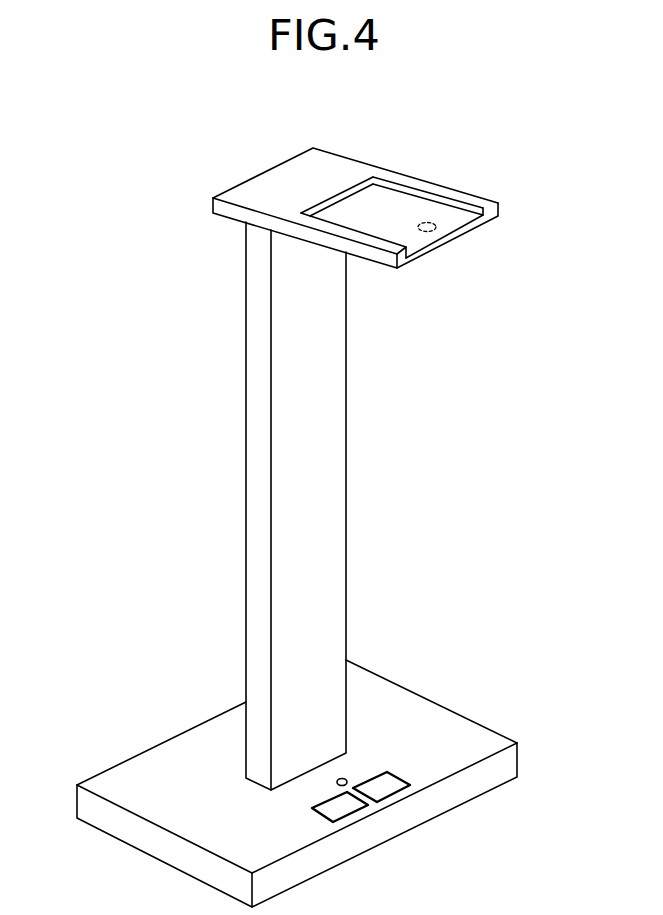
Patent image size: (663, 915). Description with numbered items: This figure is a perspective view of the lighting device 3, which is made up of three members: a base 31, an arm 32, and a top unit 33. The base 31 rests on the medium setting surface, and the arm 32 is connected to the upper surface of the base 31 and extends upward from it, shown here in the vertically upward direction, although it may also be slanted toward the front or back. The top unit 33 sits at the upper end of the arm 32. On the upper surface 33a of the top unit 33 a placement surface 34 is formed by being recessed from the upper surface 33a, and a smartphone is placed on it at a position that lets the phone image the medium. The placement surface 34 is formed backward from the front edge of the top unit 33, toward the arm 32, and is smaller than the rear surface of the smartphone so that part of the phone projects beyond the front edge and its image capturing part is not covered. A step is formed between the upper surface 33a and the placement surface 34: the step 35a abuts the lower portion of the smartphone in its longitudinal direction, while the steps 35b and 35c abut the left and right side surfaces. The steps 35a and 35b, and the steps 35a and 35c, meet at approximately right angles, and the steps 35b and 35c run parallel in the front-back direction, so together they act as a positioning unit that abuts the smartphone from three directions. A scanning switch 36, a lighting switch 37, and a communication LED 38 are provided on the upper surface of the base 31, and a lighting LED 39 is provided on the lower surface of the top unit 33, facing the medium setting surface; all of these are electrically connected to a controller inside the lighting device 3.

The lighting device 3 is at (96, 118).
The base 31 is at (125, 775).
The arm 32 is at (257, 415).
The top unit 33 is at (273, 167).
The upper surface of top unit 33a is at (245, 195).
The placement surface 34 is at (406, 210).
The step 35a is at (367, 178).
The step 35b is at (419, 194).
The step 35c is at (382, 240).
The scanning switch 36 is at (343, 803).
The lighting switch 37 is at (382, 783).
The communication LED 38 is at (346, 778).
The lighting LED 39 is at (430, 221).